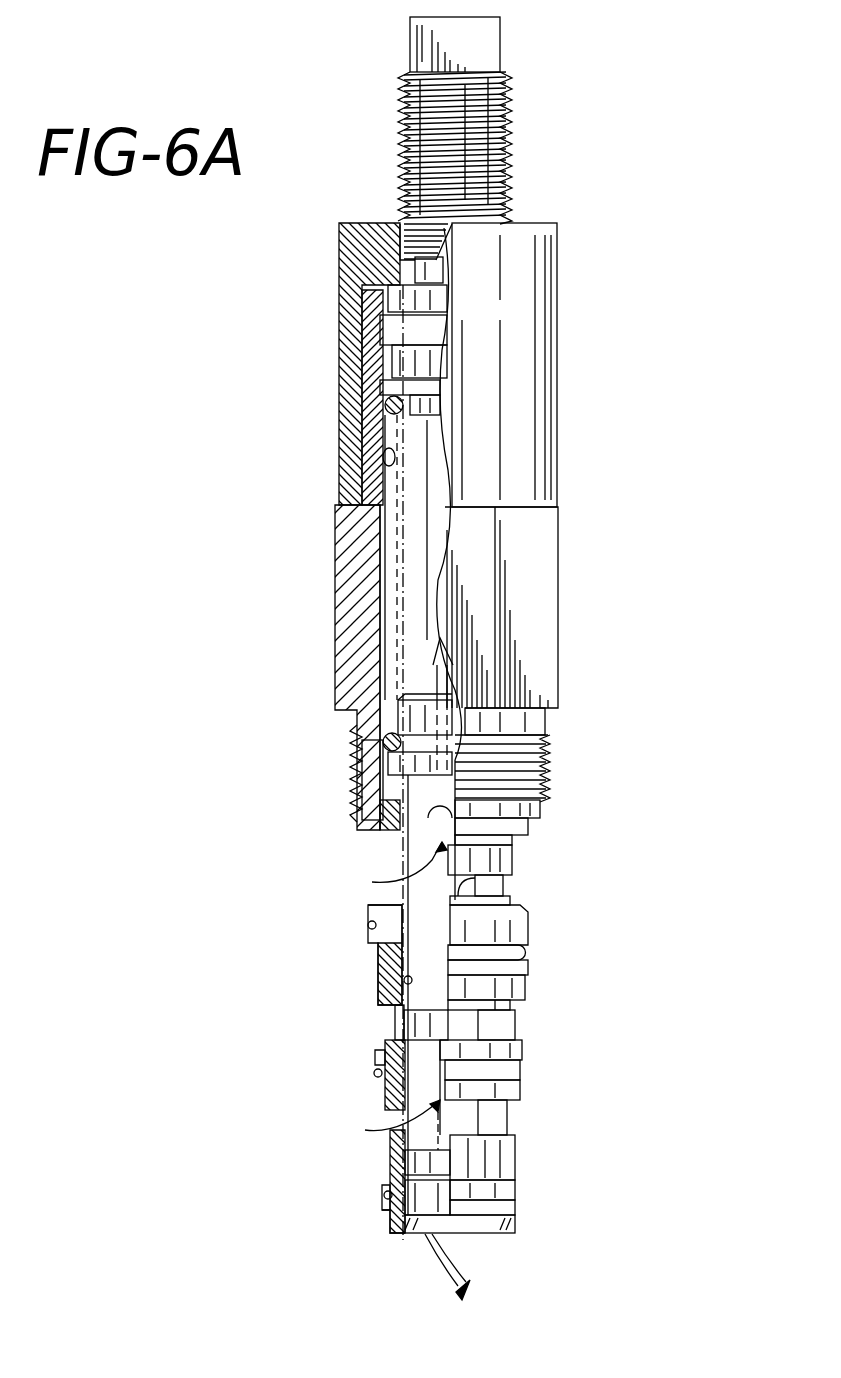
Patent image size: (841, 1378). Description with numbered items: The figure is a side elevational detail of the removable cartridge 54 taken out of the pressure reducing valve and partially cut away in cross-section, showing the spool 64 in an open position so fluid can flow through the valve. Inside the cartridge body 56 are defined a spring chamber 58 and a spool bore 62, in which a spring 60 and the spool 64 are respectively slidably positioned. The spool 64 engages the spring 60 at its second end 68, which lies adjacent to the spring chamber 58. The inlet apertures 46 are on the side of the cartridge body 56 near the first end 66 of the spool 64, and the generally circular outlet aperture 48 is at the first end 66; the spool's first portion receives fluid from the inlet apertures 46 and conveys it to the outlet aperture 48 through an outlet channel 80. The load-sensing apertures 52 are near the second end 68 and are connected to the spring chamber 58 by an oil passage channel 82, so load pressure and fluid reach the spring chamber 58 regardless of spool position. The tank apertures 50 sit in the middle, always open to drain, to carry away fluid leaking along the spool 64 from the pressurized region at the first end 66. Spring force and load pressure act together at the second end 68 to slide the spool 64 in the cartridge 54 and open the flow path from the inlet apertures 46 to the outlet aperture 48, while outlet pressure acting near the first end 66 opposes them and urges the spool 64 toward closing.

The cartridge 54 is at (662, 262).
The cartridge body 56 is at (557, 383).
The spring 60 is at (385, 412).
The spring chamber 58 is at (385, 462).
The second end 68 is at (428, 668).
The spool 64 is at (362, 775).
The spool bore 62 is at (360, 810).
The load-sensing apertures 52 is at (382, 866).
The oil passage channel 82 is at (372, 897).
The tank apertures 50 is at (395, 1018).
The inlet apertures 46 is at (383, 1092).
The outlet channel 80 is at (365, 1130).
The first end 66 is at (410, 1232).
The outlet aperture 48 is at (418, 1240).